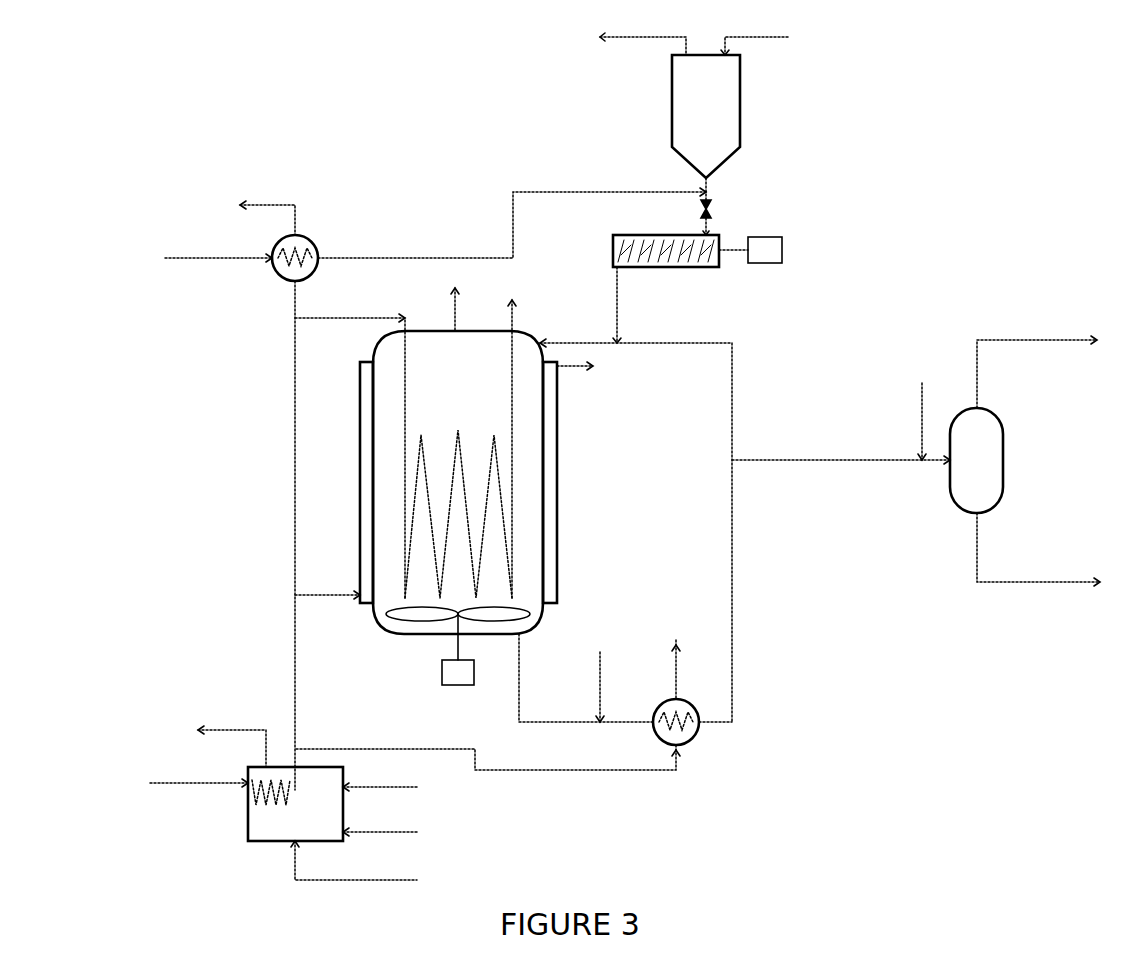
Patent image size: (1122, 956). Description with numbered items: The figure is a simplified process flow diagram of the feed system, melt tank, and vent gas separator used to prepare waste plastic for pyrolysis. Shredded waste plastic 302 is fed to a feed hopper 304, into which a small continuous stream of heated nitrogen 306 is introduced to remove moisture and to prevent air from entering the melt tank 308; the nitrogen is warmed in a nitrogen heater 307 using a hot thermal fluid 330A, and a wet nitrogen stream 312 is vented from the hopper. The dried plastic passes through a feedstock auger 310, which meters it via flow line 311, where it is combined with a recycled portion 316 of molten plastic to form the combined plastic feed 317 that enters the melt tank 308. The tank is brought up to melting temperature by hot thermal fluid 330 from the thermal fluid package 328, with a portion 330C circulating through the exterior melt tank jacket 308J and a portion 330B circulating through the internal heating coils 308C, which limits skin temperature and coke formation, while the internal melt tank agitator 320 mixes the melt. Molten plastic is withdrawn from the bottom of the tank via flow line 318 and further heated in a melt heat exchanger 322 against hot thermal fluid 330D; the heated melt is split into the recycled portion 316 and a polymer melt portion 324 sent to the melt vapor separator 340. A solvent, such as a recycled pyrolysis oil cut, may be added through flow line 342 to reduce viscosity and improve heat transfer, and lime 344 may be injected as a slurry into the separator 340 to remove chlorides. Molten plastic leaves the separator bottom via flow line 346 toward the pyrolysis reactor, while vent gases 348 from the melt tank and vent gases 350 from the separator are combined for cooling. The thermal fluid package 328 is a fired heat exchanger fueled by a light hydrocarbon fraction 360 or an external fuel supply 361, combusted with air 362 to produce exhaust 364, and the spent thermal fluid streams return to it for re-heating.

The waste plastic 302 is at (767, 35).
The feed hopper 304 is at (706, 145).
The heated nitrogen 306 is at (512, 213).
The nitrogen heater 307 is at (257, 251).
The melt tank 308 is at (458, 482).
The melt tank jacket 308J is at (437, 482).
The internal heating coils 308C is at (458, 508).
The feedstock auger 310 is at (697, 264).
The flow line 311 is at (636, 305).
The wet nitrogen stream 312 is at (643, 35).
The recycled molten plastic portion 316 is at (710, 532).
The combined plastic feed 317 is at (636, 334).
The flow line 318 is at (586, 678).
The melt tank agitator 320 is at (458, 646).
The melt heat exchanger 322 is at (693, 727).
The polymer melt portion 324 is at (841, 450).
The thermal fluid package 328 is at (295, 804).
The hot thermal fluid 330 is at (314, 535).
The hot thermal fluid portion 330A is at (267, 246).
The hot thermal fluid portion 330B is at (431, 442).
The hot thermal fluid portion 330C is at (465, 480).
The hot thermal fluid portion 330D is at (501, 694).
The melt vapor separator 340 is at (976, 460).
The solvent flow line 342 is at (618, 684).
The lime 344 is at (933, 410).
The flow line 346 is at (1038, 549).
The vent gases 348 is at (437, 305).
The vent gases 350 is at (1037, 364).
The light hydrocarbon fraction 360 is at (380, 798).
The external fuel supply 361 is at (382, 841).
The air 362 is at (354, 872).
The exhaust 364 is at (232, 738).